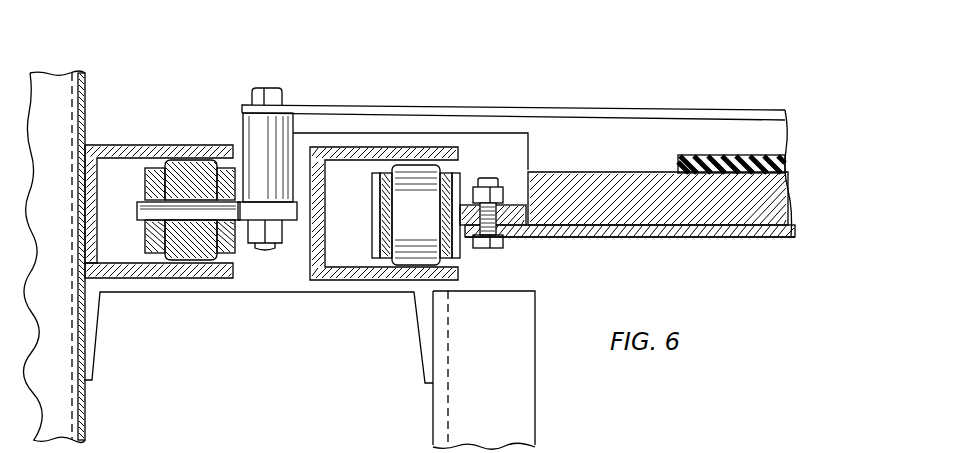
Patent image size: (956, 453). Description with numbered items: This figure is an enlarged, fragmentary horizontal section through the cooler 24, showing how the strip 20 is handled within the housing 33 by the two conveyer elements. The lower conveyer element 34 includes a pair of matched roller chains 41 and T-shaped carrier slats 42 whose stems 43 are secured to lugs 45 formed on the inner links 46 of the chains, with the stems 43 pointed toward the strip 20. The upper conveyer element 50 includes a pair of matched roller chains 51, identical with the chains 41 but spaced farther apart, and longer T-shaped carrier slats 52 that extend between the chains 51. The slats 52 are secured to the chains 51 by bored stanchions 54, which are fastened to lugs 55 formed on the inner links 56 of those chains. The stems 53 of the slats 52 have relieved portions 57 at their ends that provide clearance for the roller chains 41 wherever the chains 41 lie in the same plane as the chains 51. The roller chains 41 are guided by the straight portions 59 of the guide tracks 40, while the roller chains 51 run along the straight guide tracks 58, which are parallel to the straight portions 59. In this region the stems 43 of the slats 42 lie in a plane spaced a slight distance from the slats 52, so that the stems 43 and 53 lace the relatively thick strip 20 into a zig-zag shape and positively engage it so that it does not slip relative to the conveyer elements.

The strip 20 is at (705, 160).
The cooler 24 is at (159, 194).
The housing 33 is at (81, 73).
The lower conveyer element 34 is at (633, 237).
The guide tracks 40 is at (375, 281).
The roller chains 41 is at (456, 176).
The carrier slats 42 is at (703, 238).
The stems 43 is at (665, 210).
The lugs 45 is at (518, 222).
The inner links 46 is at (458, 250).
The upper conveyer element 50 is at (517, 140).
The roller chains 51 is at (185, 160).
The carrier slats 52 is at (342, 108).
The stems 53 is at (573, 128).
The bored stanchions 54 is at (246, 125).
The lugs 55 is at (288, 220).
The inner links 56 is at (233, 253).
The relieved portions 57 is at (378, 138).
The straight guide tracks 58 is at (128, 276).
The straight portions 59 is at (345, 265).